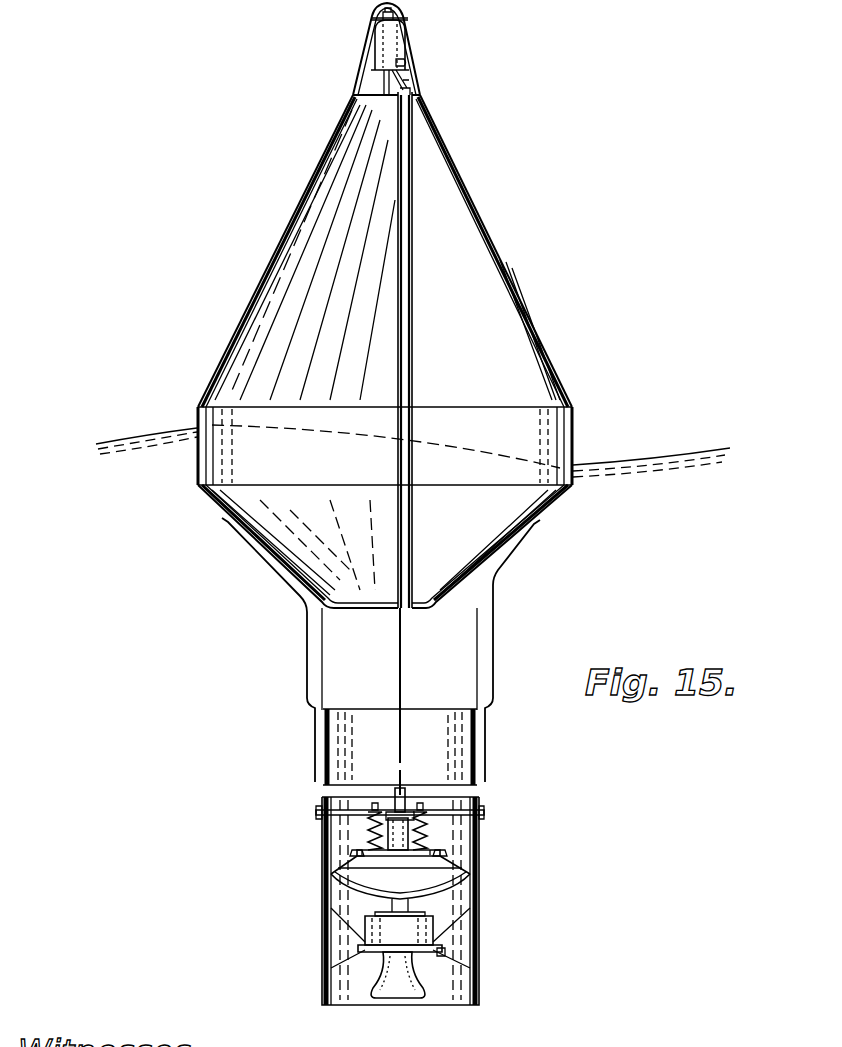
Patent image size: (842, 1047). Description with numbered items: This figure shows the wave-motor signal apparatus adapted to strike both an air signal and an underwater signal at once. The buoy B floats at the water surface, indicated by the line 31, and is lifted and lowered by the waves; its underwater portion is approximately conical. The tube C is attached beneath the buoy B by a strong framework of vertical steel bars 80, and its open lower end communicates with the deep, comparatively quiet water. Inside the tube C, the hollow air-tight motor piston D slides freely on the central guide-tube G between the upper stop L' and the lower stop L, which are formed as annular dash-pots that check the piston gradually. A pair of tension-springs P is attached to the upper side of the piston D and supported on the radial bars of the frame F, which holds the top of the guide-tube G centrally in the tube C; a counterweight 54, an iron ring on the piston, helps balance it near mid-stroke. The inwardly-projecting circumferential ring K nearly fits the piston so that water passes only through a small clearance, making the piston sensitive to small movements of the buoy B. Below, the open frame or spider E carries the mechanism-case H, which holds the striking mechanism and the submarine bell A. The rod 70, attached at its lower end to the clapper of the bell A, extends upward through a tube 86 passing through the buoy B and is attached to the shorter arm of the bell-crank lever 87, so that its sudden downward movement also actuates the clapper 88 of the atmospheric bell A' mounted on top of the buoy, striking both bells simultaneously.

The atmospheric bell A' is at (429, 51).
The clapper 88 is at (404, 63).
The bell-crank lever 87 is at (410, 86).
The tube 86 is at (412, 283).
The buoy B is at (385, 305).
The water surface line 31 is at (97, 444).
The vertical steel bars 80 is at (316, 668).
The rod 70 is at (402, 663).
The upper stop L' is at (413, 789).
The frame F is at (455, 808).
The central guide-tube G is at (372, 832).
The tension-springs P is at (440, 835).
The counterweight 54 is at (362, 852).
The circumferential ring K is at (440, 853).
The motor piston D is at (400, 878).
The tube C is at (480, 889).
The lower stop L is at (443, 922).
The open frame or spider E is at (331, 936).
The mechanism-case H is at (443, 949).
The submarine bell A is at (398, 999).